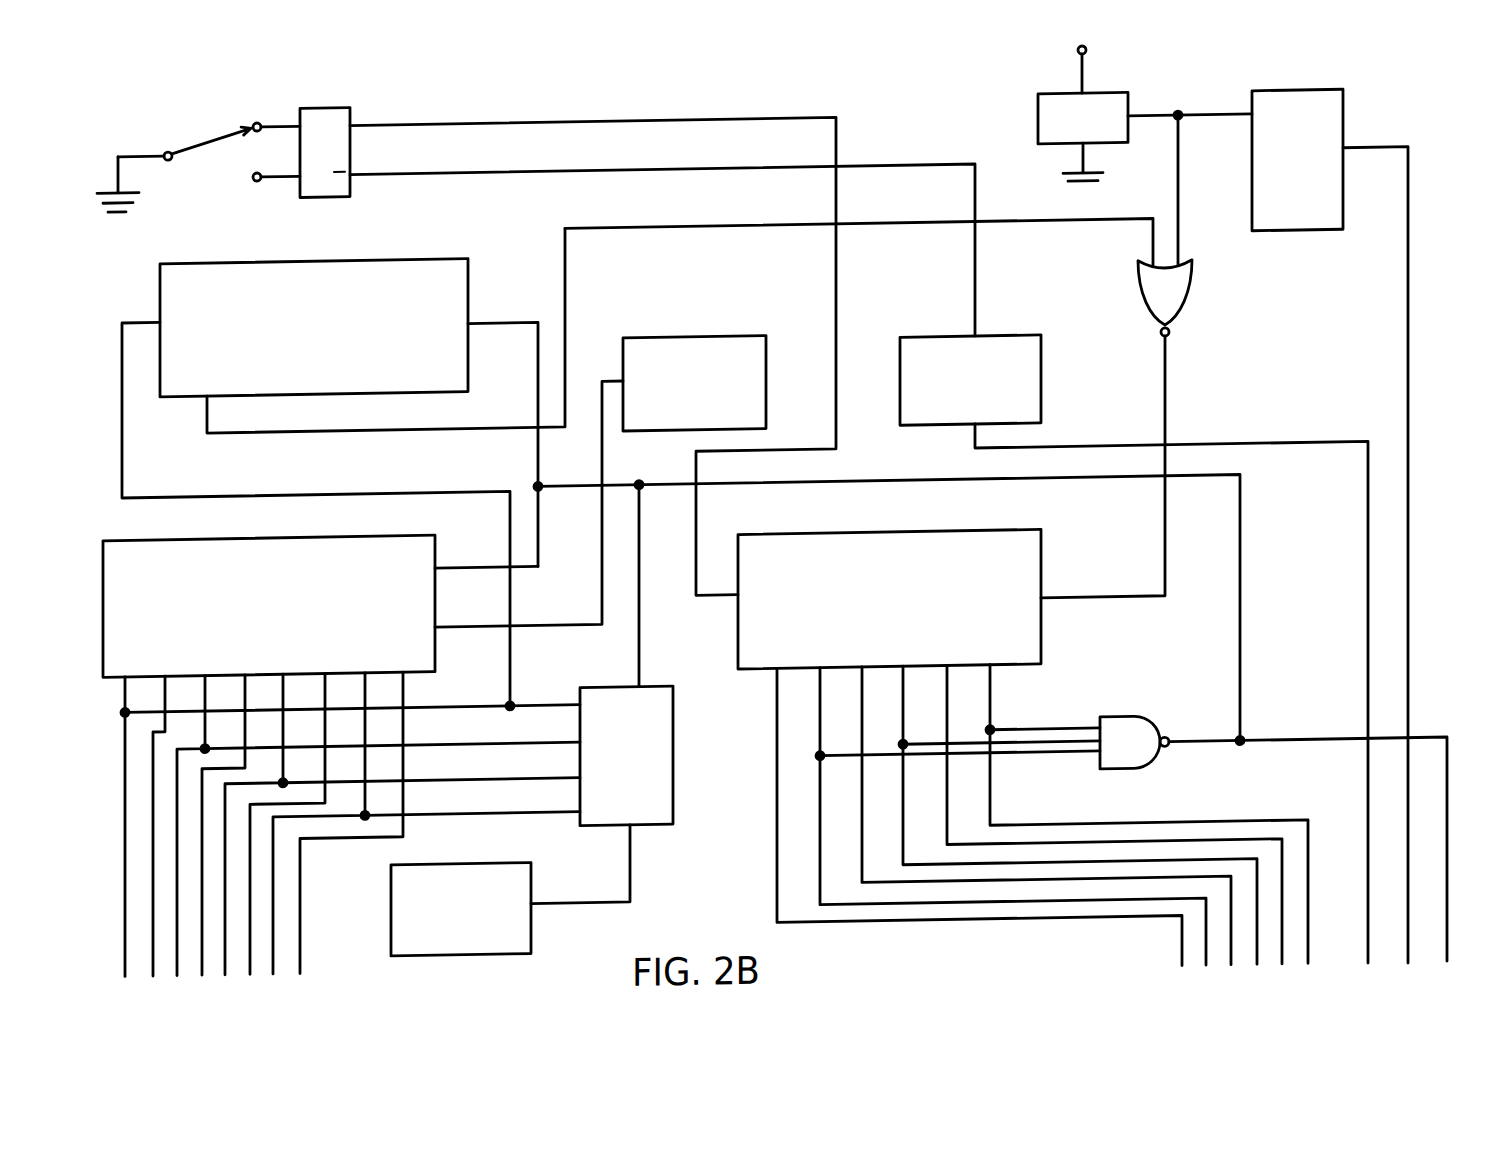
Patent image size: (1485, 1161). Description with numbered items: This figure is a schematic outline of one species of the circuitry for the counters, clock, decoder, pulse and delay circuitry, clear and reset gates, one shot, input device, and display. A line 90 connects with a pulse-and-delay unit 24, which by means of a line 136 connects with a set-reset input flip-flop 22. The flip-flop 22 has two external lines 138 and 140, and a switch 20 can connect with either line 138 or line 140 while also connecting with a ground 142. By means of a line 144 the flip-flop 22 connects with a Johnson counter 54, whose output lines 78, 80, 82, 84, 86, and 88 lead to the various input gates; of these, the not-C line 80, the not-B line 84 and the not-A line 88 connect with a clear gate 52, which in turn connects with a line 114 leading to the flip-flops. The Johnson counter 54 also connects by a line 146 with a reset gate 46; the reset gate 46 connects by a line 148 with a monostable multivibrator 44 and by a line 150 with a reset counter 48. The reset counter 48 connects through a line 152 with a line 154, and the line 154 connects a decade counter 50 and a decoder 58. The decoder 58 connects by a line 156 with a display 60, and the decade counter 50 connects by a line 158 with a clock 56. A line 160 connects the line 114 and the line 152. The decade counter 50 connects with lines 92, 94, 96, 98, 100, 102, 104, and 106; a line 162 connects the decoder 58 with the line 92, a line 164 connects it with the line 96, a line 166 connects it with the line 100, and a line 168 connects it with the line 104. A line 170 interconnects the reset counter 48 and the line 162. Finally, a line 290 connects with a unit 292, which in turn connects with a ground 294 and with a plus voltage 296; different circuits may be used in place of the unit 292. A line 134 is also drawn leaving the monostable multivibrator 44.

The switch 20 is at (190, 137).
The set-reset input flip-flop 22 is at (325, 153).
The pulse-and-delay unit 24 is at (970, 380).
The monostable multivibrator 44 is at (1297, 160).
The reset gate 46 is at (1165, 298).
The reset counter 48 is at (314, 328).
The decade counter 50 is at (269, 606).
The clear gate 52 is at (994, 745).
The Johnson counter 54 is at (889, 599).
The clock 56 is at (694, 383).
The decoder 58 is at (626, 756).
The display 60 is at (461, 909).
The line 78 is at (776, 819).
The not-C line 80 is at (820, 840).
The line 82 is at (862, 872).
The not-B line 84 is at (923, 869).
The line 86 is at (1013, 847).
The not-A line 88 is at (1121, 829).
The line 90 is at (1368, 594).
The line 92 is at (123, 737).
The line 94 is at (152, 763).
The line 96 is at (177, 801).
The line 98 is at (202, 836).
The line 100 is at (227, 868).
The line 102 is at (253, 880).
The line 104 is at (275, 910).
The line 106 is at (300, 950).
The line 114 is at (1449, 762).
The flip-flop output line 134 is at (1408, 339).
The line 136 is at (735, 168).
The external line 138 is at (283, 169).
The external line 140 is at (277, 119).
The ground 142 is at (130, 197).
The line 144 is at (481, 119).
The line 146 is at (1163, 563).
The line 148 is at (1178, 197).
The line 150 is at (333, 425).
The line 152 is at (487, 319).
The line 154 is at (492, 536).
The line 156 is at (630, 853).
The line 158 is at (451, 623).
The line 160 is at (871, 482).
The line 162 is at (466, 696).
The line 164 is at (488, 730).
The line 166 is at (481, 765).
The line 168 is at (491, 799).
The line 170 is at (243, 488).
The line 290 is at (1147, 117).
The unit 292 is at (1083, 136).
The ground 294 is at (1087, 196).
The plus voltage 296 is at (1078, 71).